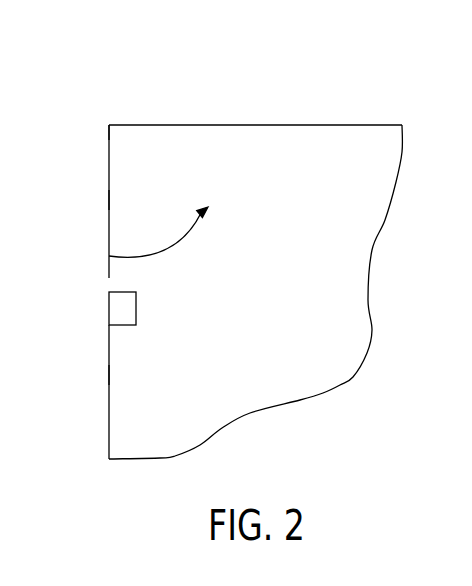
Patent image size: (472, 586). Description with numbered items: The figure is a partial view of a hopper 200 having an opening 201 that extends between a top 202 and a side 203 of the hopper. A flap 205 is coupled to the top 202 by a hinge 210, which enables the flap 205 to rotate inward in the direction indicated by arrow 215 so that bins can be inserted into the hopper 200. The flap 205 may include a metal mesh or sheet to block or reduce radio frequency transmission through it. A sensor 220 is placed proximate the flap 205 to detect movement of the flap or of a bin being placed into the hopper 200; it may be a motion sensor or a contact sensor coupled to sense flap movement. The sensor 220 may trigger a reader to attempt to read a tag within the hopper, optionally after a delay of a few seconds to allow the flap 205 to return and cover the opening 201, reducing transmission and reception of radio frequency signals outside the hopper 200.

The hopper 200 is at (112, 73).
The opening 201 is at (107, 168).
The top 202 is at (255, 124).
The side 203 is at (109, 374).
The flap 205 is at (109, 199).
The hinge 210 is at (110, 127).
The arrow 215 is at (168, 247).
The sensor 220 is at (109, 308).